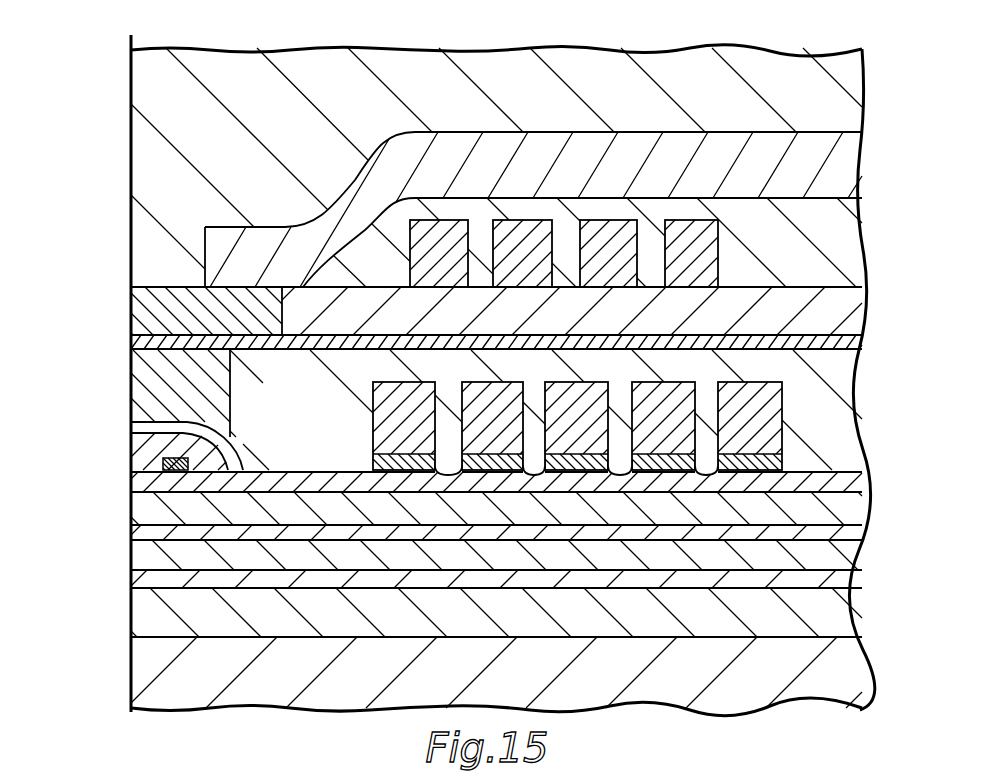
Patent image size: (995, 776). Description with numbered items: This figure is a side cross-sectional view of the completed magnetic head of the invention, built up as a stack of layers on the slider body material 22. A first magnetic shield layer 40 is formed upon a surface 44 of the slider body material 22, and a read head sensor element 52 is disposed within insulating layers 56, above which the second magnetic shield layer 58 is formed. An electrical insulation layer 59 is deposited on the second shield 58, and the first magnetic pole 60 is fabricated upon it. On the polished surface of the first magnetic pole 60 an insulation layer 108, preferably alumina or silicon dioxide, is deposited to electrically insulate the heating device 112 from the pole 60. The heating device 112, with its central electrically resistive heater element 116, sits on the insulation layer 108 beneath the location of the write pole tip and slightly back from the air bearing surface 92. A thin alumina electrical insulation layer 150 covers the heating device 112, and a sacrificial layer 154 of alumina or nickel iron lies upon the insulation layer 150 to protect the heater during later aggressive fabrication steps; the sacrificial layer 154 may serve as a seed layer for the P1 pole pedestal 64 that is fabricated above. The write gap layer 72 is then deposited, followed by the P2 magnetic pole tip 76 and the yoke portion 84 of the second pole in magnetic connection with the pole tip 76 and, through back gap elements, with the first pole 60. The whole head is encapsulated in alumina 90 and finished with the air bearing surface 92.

The slider body material 22 is at (147, 665).
The first magnetic shield layer 40 is at (143, 613).
The surface 44 is at (462, 633).
The read head sensor element 52 is at (127, 580).
The insulating layers 56 is at (457, 559).
The second magnetic shield layer 58 is at (137, 557).
The electrical insulation layer 59 is at (137, 530).
The first magnetic pole 60 is at (138, 508).
The P1 pole pedestal 64 is at (147, 375).
The write gap layer 72 is at (131, 348).
The P2 magnetic pole tip 76 is at (140, 307).
The yoke portion 84 is at (347, 194).
The alumina 90 is at (822, 105).
The air bearing surface 92 is at (131, 185).
The insulation layer 108 is at (131, 487).
The heating device 112 is at (167, 426).
The electrically resistive heater element 116 is at (131, 452).
The electrical insulation layer 150 is at (227, 457).
The sacrificial layer 154 is at (192, 426).